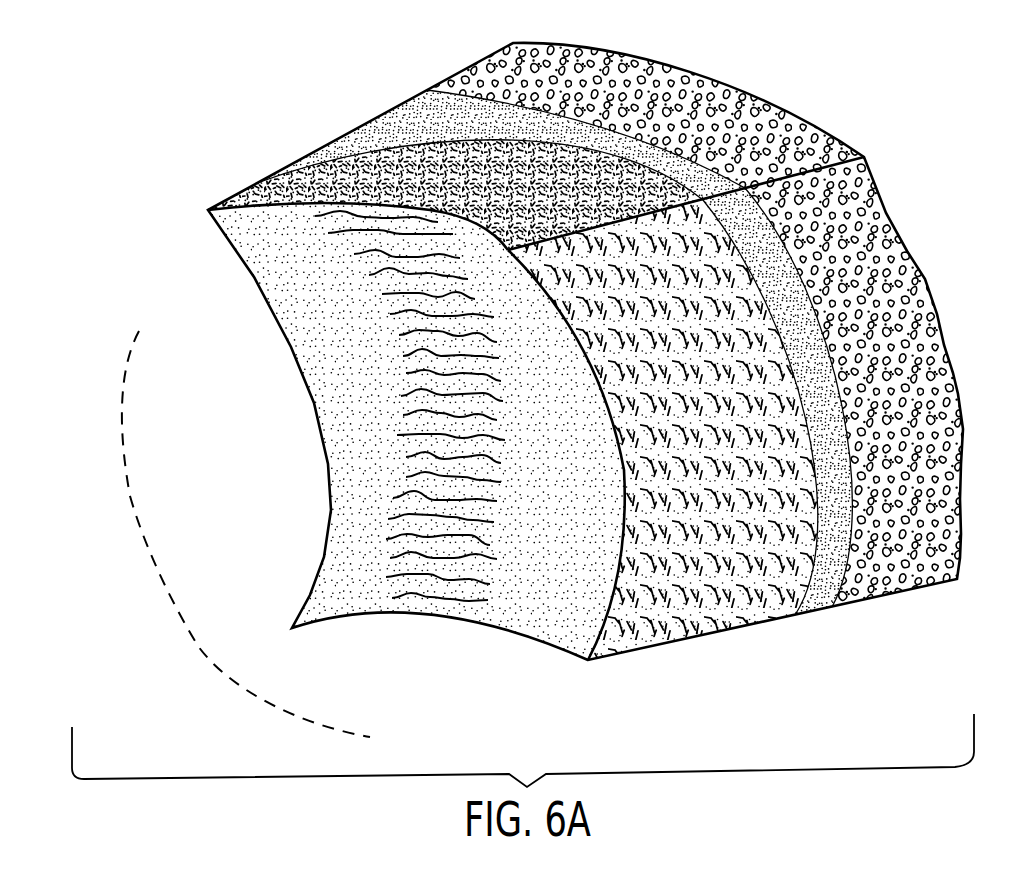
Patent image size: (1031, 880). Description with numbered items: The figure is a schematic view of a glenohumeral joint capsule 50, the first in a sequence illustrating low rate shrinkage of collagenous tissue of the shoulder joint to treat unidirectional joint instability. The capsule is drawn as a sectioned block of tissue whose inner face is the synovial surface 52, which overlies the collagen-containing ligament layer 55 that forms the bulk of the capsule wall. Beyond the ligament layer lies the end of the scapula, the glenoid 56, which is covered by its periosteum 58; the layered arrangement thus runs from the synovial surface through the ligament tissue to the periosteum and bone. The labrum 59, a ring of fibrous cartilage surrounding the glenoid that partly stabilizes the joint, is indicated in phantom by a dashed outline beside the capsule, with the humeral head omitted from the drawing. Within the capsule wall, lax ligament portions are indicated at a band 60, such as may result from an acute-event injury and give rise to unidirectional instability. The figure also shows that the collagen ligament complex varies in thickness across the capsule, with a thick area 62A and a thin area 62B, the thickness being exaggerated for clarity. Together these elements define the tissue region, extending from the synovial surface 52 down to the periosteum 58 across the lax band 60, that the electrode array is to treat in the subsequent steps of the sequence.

The glenohumeral joint capsule 50 is at (149, 222).
The synovial surface 52 is at (282, 282).
The collagen-containing ligament layer 55 is at (696, 604).
The glenoid 56 is at (493, 64).
The periosteum 58 is at (420, 117).
The labrum 59 is at (121, 450).
The band of lax ligament portions 60 is at (247, 243).
The thick area 62A is at (470, 163).
The thin area 62B is at (257, 190).